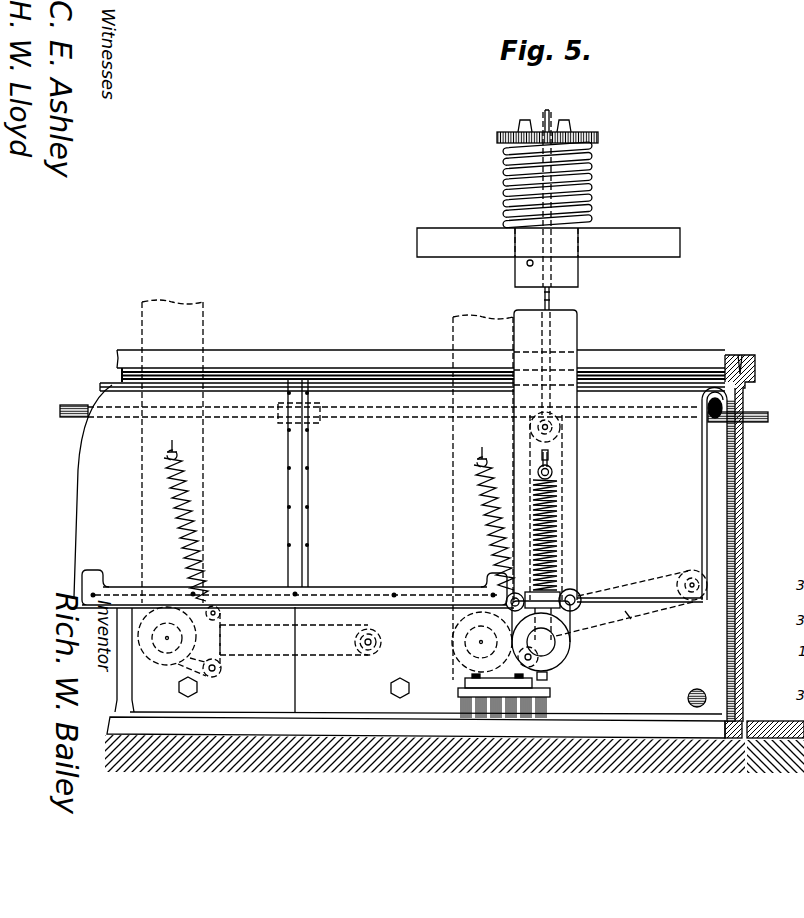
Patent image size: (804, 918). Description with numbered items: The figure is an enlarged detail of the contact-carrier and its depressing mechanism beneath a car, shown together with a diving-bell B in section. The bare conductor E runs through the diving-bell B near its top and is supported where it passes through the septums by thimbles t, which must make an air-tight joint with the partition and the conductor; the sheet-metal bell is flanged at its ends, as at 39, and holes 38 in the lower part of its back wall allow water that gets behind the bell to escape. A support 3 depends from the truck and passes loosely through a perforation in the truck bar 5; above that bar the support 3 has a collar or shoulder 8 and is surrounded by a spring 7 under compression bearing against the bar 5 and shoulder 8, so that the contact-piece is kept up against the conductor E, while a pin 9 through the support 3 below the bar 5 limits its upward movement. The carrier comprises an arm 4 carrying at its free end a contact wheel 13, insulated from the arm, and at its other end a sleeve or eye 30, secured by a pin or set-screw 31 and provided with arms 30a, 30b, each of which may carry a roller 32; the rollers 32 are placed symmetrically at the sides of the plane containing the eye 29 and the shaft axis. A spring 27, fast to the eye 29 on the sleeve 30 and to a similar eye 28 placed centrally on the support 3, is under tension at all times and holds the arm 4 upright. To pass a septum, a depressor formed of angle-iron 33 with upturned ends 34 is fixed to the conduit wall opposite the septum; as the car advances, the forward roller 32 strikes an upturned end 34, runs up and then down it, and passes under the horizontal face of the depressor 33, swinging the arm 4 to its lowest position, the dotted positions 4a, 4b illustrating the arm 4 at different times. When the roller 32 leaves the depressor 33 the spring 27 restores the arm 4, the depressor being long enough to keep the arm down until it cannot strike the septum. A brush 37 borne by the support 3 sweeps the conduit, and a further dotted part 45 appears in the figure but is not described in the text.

The support 3 is at (567, 273).
The arm 4 is at (556, 465).
The dotted position of arm 4a is at (636, 617).
The dotted position of arm 4b is at (279, 664).
The bar of the truck 5 is at (617, 239).
The spring 7 is at (594, 178).
The collar or shoulder 8 is at (600, 137).
The pin 9 is at (527, 264).
The contact wheel 13 is at (560, 432).
The spring 27 is at (558, 491).
The eye 28 is at (541, 463).
The eye or hook 29 is at (561, 590).
The sleeve or eye 30 is at (563, 642).
The arm of sleeve 30a is at (221, 671).
The arm of sleeve 30b is at (219, 626).
The pin or set-screw 31 is at (550, 678).
The roller 32 is at (222, 613).
The depressor 33 is at (353, 603).
The upturned end 34 is at (96, 578).
The brush 37 is at (551, 695).
The hole 38 is at (688, 695).
The flange 39 is at (309, 528).
The link 45 is at (330, 651).
The thimble t is at (312, 424).
The diving-bell B is at (629, 505).
The conductor E is at (750, 432).